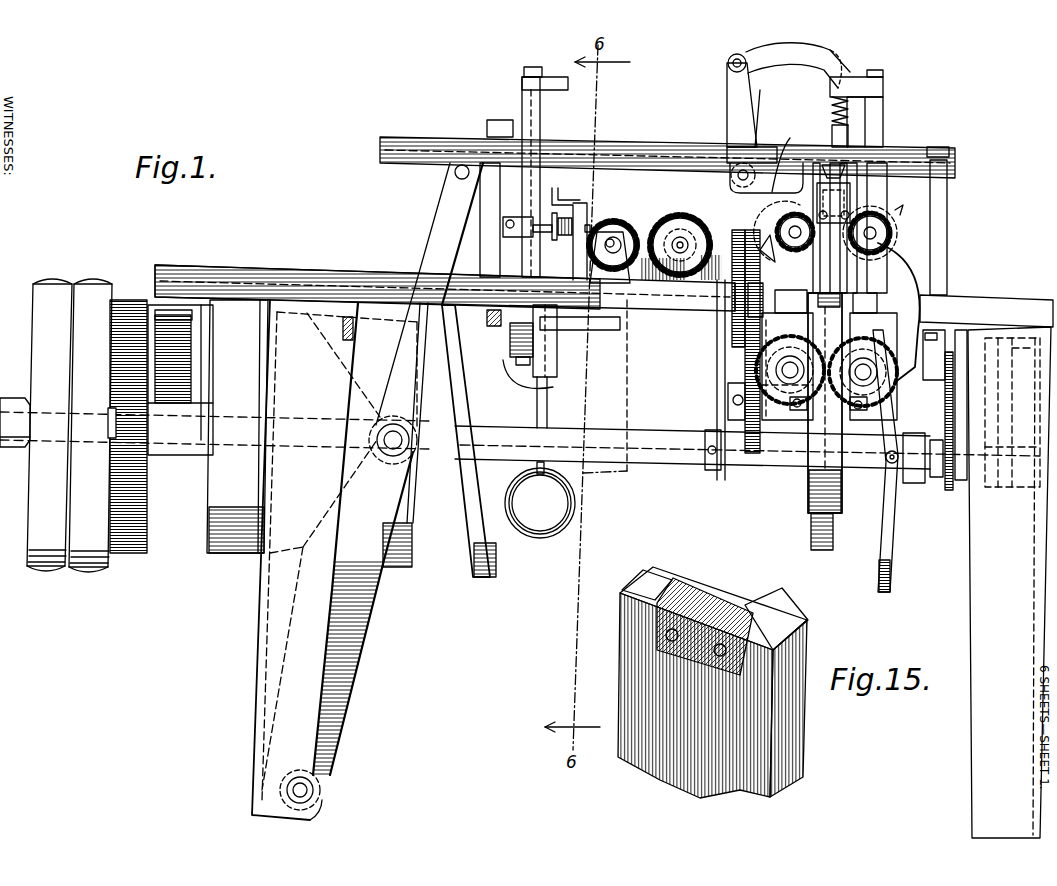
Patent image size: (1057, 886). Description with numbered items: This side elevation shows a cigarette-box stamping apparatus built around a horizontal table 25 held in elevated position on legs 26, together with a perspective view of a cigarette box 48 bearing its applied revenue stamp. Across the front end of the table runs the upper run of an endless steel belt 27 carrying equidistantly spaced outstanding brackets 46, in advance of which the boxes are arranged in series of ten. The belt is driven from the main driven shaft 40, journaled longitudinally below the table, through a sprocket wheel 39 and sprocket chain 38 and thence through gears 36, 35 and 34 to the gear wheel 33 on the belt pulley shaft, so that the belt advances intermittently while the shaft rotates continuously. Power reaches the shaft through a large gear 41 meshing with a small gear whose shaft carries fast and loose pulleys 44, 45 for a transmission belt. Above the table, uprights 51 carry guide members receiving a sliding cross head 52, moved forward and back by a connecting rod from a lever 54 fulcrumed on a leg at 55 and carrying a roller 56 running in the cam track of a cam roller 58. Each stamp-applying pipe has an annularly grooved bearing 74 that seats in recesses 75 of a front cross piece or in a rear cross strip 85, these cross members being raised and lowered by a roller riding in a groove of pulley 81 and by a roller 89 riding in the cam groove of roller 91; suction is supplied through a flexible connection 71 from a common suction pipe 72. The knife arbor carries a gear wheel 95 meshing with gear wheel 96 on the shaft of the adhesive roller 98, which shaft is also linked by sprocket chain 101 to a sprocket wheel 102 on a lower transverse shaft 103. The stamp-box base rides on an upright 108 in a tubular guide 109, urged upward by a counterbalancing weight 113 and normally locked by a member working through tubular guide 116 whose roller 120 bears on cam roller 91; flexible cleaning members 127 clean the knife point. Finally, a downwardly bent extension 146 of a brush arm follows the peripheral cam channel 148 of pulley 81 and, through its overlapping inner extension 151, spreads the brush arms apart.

In FIG. 1, the horizontal table 25 is at (316, 270).
In FIG. 1, the legs 26 is at (256, 680).
In FIG. 1, the endless steel belt 27 is at (812, 520).
In FIG. 1, the gear wheel 33 is at (745, 442).
In FIG. 1, the gear 34 is at (735, 368).
In FIG. 1, the gear 35 is at (740, 348).
In FIG. 1, the gear 36 is at (762, 232).
In FIG. 1, the sprocket chain 38 is at (740, 330).
In FIG. 1, the sprocket wheel 39 is at (690, 433).
In FIG. 1, the main driven shaft 40 is at (662, 455).
In FIG. 1, the large gear 41 is at (128, 300).
In FIG. 1, the fast pulley 44 is at (45, 328).
In FIG. 1, the loose pulley 45 is at (100, 570).
In FIG. 1, the brackets 46 is at (826, 552).
In FIG. 15, the cigarette box 48 is at (713, 682).
In FIG. 1, the uprights 51 is at (482, 180).
In FIG. 1, the cross head 52 is at (786, 153).
In FIG. 1, the lever 54 is at (428, 353).
In FIG. 1, the fulcrum 55 is at (300, 790).
In FIG. 1, the roller 56 is at (405, 455).
In FIG. 1, the cam roller 58 is at (210, 480).
In FIG. 1, the flexible connection 71 is at (730, 60).
In FIG. 1, the suction pipe 72 is at (727, 70).
In FIG. 1, the annularly grooved bearing 74 is at (855, 74).
In FIG. 1, the recesses 75 is at (884, 95).
In FIG. 1, the pulley 81 is at (898, 570).
In FIG. 1, the cross strip 85 is at (832, 100).
In FIG. 1, the roller 89 is at (552, 387).
In FIG. 1, the roller 91 is at (476, 535).
In FIG. 1, the gear wheel 95 is at (616, 222).
In FIG. 1, the gear wheel 96 is at (680, 231).
In FIG. 1, the adhesive roller 98 is at (560, 238).
In FIG. 1, the sprocket chain 101 is at (703, 287).
In FIG. 1, the sprocket wheel 102 is at (805, 415).
In FIG. 1, the lower transverse shaft 103 is at (800, 392).
In FIG. 1, the upright 108 is at (552, 420).
In FIG. 1, the tubular guide 109 is at (560, 360).
In FIG. 1, the counterbalancing weight 113 is at (548, 530).
In FIG. 1, the tubular guide 116 is at (580, 326).
In FIG. 1, the roller 120 is at (488, 316).
In FIG. 1, the flexible cleaning members 127 is at (553, 203).
In FIG. 1, the downwardly bent extension 146 is at (888, 478).
In FIG. 1, the peripheral cam channel 148 is at (889, 535).
In FIG. 1, the inner extension 151 is at (912, 233).